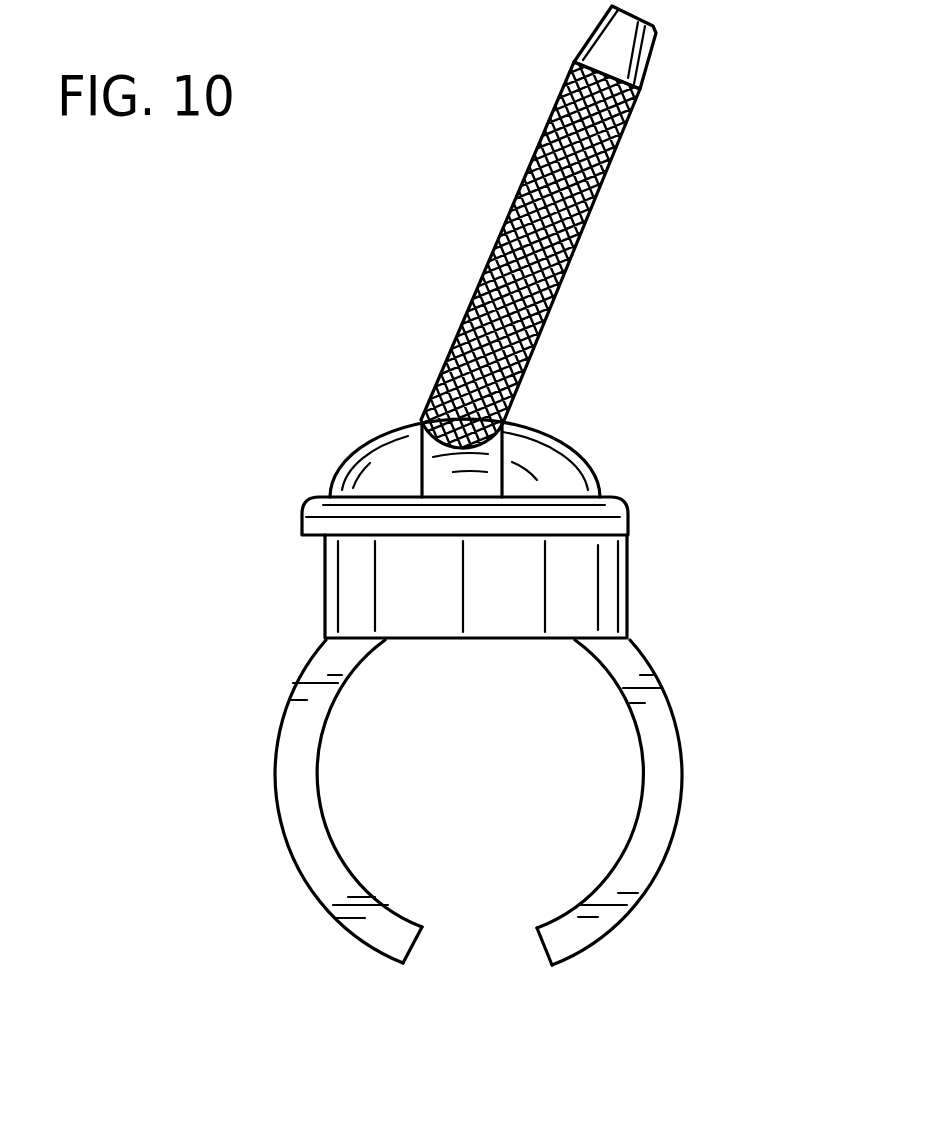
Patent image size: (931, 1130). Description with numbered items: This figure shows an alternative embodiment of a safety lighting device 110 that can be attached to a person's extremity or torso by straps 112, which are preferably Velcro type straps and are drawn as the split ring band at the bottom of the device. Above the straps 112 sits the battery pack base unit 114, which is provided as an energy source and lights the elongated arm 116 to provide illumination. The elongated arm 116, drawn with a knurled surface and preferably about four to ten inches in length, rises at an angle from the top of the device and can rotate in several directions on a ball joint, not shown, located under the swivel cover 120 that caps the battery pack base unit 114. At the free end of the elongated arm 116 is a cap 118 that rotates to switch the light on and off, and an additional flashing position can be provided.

The safety lighting device 110 is at (335, 279).
The straps 112 is at (290, 747).
The battery pack base unit 114 is at (608, 560).
The elongated arm 116 is at (603, 153).
The cap 118 is at (628, 45).
The swivel cover 120 is at (540, 457).